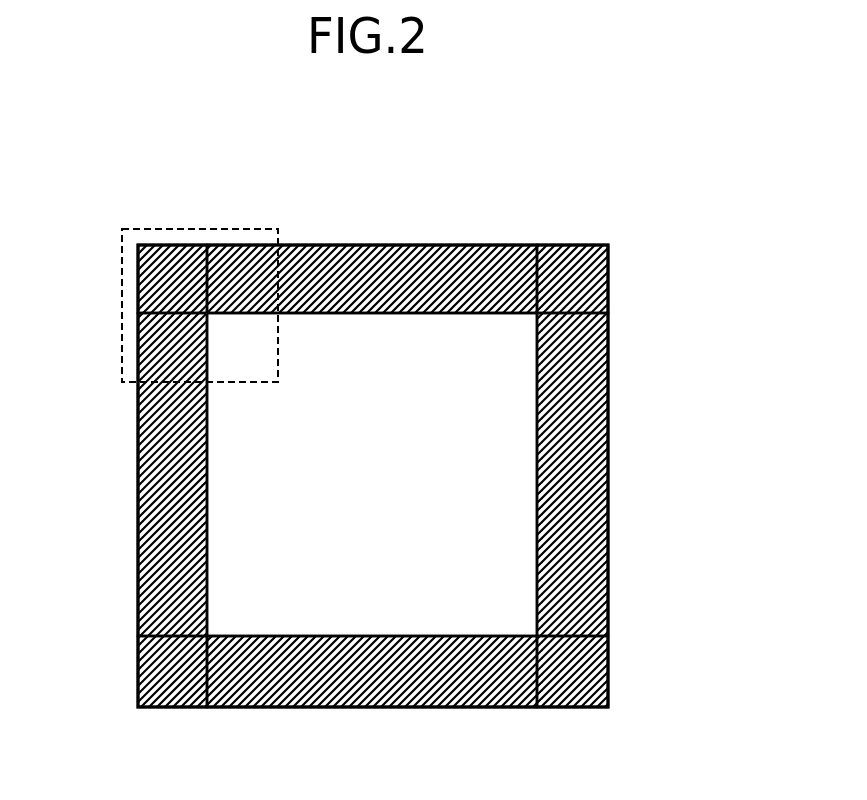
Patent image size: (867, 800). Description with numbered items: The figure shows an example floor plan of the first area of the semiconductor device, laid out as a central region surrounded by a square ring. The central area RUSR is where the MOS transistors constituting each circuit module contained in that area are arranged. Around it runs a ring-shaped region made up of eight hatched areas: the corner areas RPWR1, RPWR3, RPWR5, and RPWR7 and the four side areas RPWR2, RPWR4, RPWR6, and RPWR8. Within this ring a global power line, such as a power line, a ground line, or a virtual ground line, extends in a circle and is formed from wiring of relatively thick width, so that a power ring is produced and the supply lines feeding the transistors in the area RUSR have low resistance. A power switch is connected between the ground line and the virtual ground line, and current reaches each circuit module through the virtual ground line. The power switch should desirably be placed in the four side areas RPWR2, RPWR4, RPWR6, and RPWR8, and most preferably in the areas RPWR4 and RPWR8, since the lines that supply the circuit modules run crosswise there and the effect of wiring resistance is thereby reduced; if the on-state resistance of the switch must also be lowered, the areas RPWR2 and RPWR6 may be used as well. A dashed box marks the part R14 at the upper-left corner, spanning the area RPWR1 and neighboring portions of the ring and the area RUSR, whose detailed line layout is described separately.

The power ring area RPWR1 is at (166, 294).
The power ring area RPWR2 is at (408, 256).
The power ring area RPWR3 is at (595, 266).
The power ring area RPWR4 is at (595, 433).
The power ring area RPWR5 is at (595, 657).
The power ring area RPWR6 is at (333, 694).
The power ring area RPWR7 is at (162, 686).
The power ring area RPWR8 is at (163, 467).
The area RUSR is at (423, 545).
The R14 part R14 is at (222, 229).